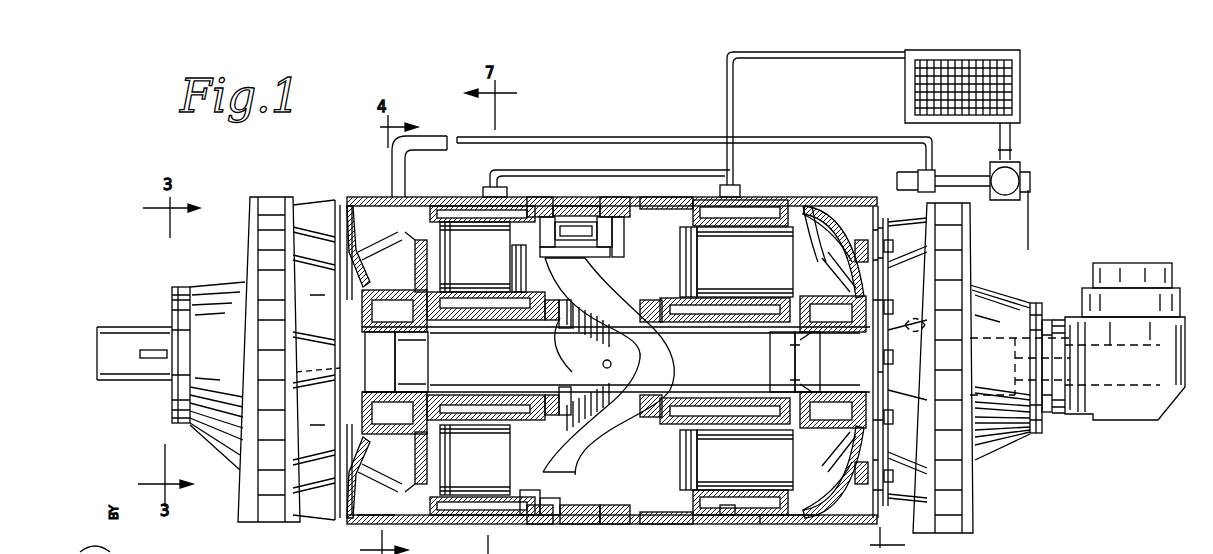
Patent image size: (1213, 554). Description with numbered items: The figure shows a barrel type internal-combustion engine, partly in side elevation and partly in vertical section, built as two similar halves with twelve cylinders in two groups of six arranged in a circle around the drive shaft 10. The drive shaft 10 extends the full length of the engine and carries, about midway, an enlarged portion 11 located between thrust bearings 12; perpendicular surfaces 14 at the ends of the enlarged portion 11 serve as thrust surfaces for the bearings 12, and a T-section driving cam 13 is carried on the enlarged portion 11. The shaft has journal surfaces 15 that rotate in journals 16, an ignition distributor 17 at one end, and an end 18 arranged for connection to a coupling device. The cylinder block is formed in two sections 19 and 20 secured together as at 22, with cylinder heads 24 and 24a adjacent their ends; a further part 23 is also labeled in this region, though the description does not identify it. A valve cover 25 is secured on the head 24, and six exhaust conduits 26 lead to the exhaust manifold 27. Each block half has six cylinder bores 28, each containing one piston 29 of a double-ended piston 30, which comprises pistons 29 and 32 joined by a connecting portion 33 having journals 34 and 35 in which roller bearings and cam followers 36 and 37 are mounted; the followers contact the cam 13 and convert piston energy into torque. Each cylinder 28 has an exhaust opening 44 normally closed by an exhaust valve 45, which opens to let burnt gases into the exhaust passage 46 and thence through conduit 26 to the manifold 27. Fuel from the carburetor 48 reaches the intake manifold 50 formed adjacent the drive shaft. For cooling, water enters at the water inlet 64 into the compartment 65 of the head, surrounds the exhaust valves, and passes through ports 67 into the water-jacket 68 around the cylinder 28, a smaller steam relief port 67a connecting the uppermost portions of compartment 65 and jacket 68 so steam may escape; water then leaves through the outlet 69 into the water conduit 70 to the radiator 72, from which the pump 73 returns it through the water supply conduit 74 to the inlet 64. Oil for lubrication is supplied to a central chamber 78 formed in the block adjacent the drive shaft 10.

The drive shaft 10 is at (100, 330).
The enlarged portion 11 is at (592, 357).
The thrust bearings 12 is at (557, 400).
The T-section driving cam 13 is at (652, 347).
The perpendicular surfaces 14 is at (565, 322).
The journal surfaces 15 is at (380, 385).
The journals 16 is at (405, 392).
The ignition distributor 17 is at (1125, 408).
The coupling connection end 18 is at (148, 350).
The cylinder block section 19 is at (570, 515).
The cylinder block section 20 is at (648, 210).
The securing joint 22 is at (605, 515).
The housing member 23 is at (535, 515).
The cylinder head 24 is at (776, 524).
The cylinder head 24a is at (375, 200).
The valve cover 25 is at (235, 278).
The exhaust conduits 26 is at (312, 208).
The exhaust manifold 27 is at (262, 236).
The cylinder bore 28 is at (775, 235).
The piston 29 is at (690, 265).
The double-ended piston 30 is at (566, 210).
The piston 32 is at (470, 272).
The connecting portion 33 is at (582, 222).
The journal 34 is at (547, 217).
The journal 35 is at (606, 222).
The cam follower 36 is at (512, 256).
The cam follower 37 is at (600, 264).
The exhaust opening 44 is at (855, 232).
The exhaust valve 45 is at (832, 250).
The exhaust passage 46 is at (872, 226).
The carburetor 48 is at (728, 515).
The intake manifold 50 is at (410, 312).
The water inlet 64 is at (296, 372).
The compartment 65 is at (368, 520).
The port 67 is at (795, 445).
The steam relief port 67a is at (436, 196).
The water-jacket 68 is at (762, 205).
The outlet 69 is at (486, 196).
The water conduit 70 is at (850, 52).
The radiator 72 is at (977, 86).
The pump 73 is at (1012, 170).
The water supply conduit 74 is at (950, 178).
The central chamber 78 is at (438, 396).